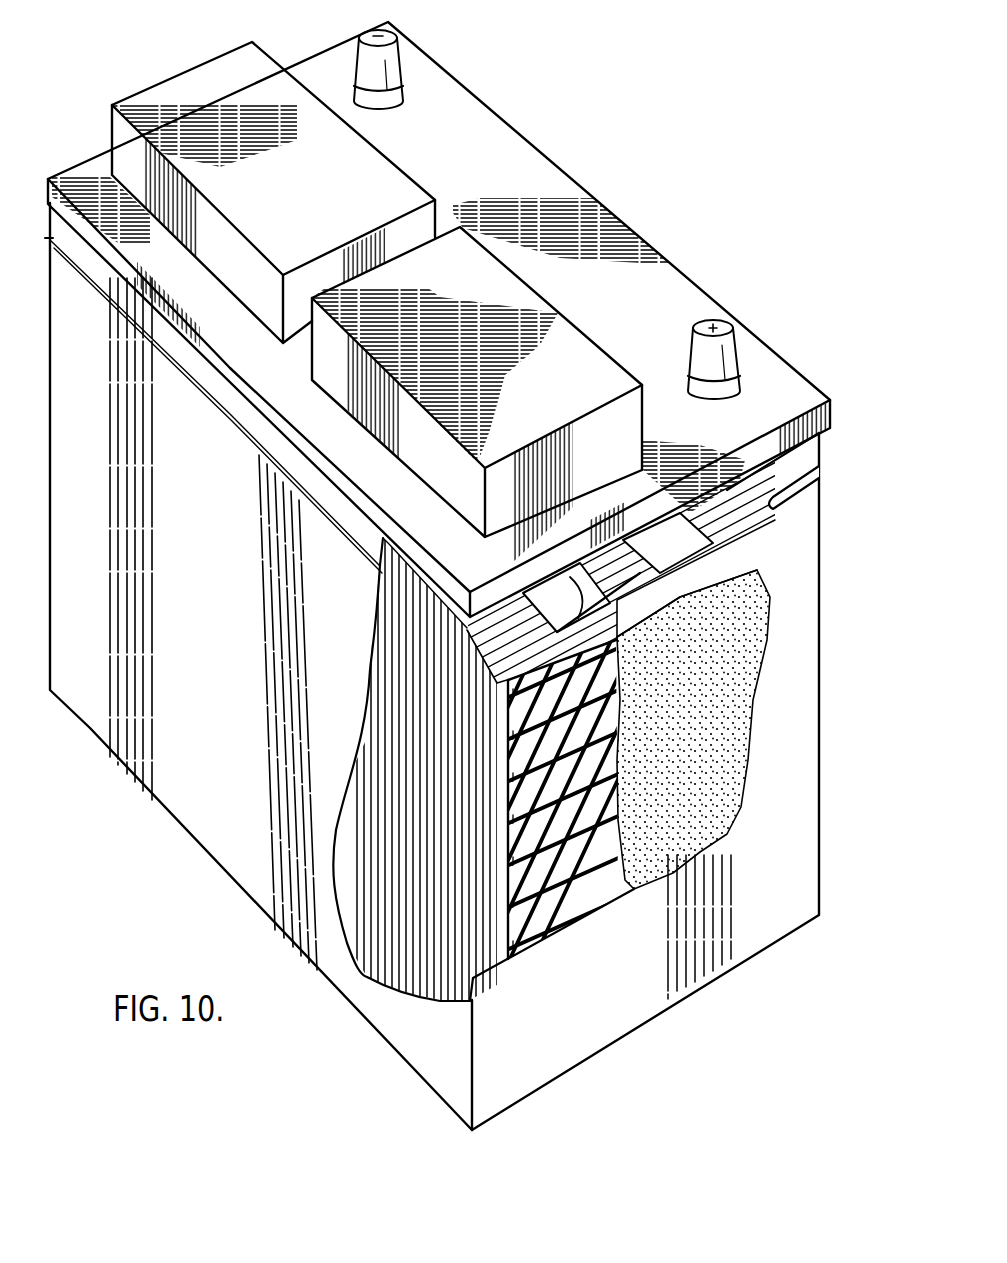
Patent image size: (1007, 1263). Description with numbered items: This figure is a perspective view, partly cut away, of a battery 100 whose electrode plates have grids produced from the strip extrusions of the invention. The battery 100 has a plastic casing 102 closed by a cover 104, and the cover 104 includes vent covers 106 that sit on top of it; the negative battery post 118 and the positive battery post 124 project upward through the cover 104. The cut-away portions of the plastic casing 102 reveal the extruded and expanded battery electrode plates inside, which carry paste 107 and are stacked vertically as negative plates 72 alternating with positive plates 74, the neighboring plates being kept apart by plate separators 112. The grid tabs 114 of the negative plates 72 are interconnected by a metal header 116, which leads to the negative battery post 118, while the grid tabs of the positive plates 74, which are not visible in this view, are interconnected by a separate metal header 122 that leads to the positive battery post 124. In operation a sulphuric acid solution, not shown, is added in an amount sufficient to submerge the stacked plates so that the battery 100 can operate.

The battery 100 is at (755, 301).
The plastic casing 102 is at (817, 538).
The cover 104 is at (833, 413).
The vent covers 106 is at (432, 257).
The paste 107 is at (720, 687).
The plate separators 112 is at (492, 939).
The grid tabs 114 is at (545, 590).
The metal header 116 is at (540, 562).
The negative battery post 118 is at (398, 60).
The metal header 122 is at (660, 528).
The positive battery post 124 is at (738, 350).
The negative plates 72 is at (743, 563).
The positive plates 74 is at (770, 508).